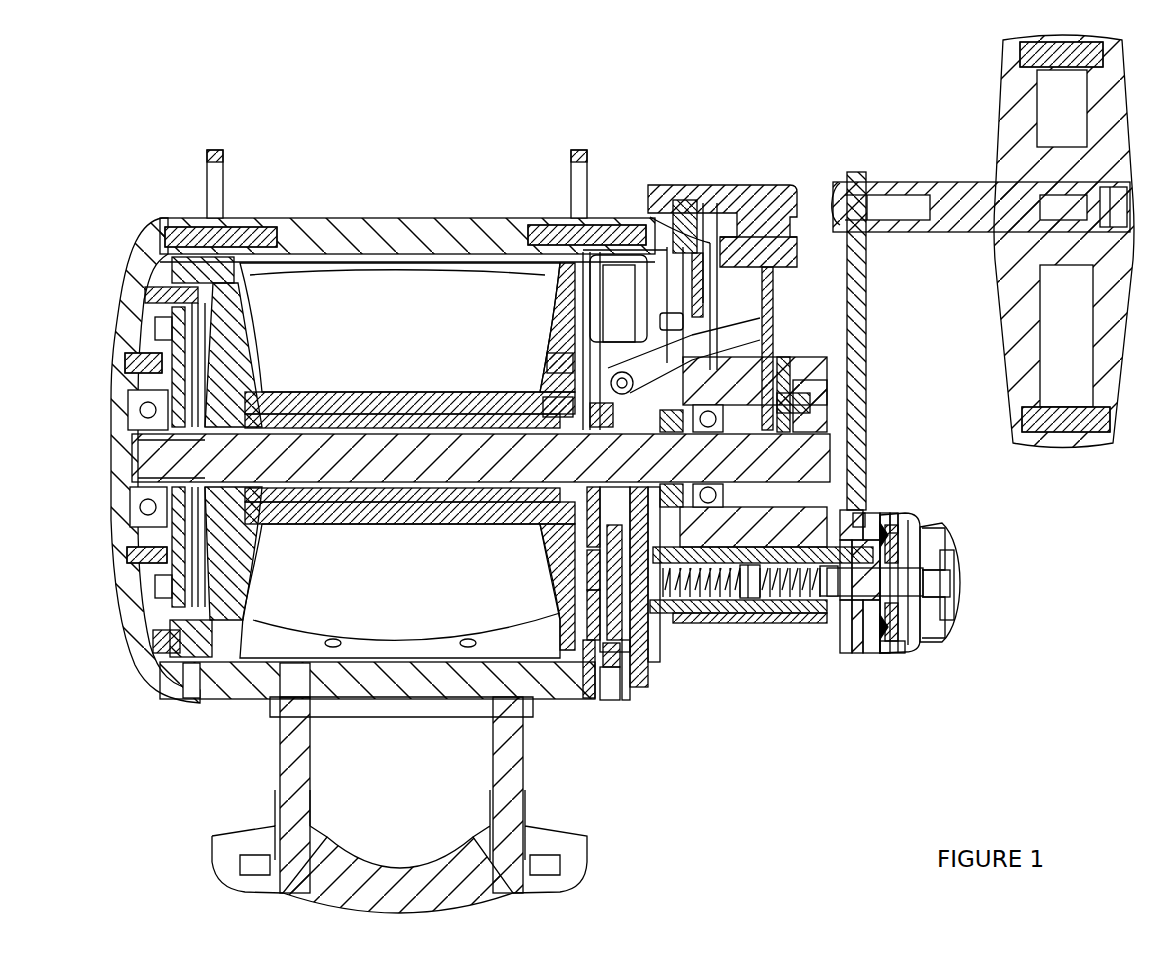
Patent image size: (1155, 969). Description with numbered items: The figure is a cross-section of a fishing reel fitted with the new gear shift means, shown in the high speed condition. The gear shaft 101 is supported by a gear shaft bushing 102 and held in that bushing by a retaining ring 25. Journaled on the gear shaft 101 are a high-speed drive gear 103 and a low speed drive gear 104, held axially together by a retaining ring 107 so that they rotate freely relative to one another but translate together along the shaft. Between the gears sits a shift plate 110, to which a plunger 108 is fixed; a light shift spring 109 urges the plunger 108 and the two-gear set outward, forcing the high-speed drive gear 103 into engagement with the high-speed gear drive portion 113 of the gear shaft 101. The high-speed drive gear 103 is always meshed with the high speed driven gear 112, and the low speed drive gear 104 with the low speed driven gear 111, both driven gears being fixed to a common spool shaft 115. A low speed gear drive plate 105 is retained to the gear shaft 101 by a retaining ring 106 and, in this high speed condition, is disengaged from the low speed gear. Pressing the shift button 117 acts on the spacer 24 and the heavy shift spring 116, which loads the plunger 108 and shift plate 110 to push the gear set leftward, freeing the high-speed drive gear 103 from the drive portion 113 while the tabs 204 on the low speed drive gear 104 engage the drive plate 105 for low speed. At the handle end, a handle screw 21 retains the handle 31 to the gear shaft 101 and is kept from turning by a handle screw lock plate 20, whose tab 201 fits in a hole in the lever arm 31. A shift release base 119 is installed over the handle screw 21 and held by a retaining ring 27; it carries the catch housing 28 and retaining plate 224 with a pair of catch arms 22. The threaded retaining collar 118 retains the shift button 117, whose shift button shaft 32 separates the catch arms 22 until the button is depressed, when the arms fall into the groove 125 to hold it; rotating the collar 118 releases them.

The handle screw lock plate 20 is at (878, 655).
The handle screw 21 is at (872, 530).
The catch arms 22 is at (905, 557).
The spacer 24 is at (848, 612).
The retaining ring 25 is at (858, 652).
The retaining ring 27 is at (895, 650).
The catch housing 28 is at (892, 531).
The handle 31 is at (868, 324).
The shift button shaft 32 is at (958, 585).
The gear shaft 101 is at (855, 540).
The gear shaft bushing 102 is at (866, 525).
The high-speed drive gear 103 is at (640, 702).
The low speed drive gear 104 is at (610, 702).
The low speed gear drive plate 105 is at (592, 620).
The retaining ring 106 is at (590, 578).
The retaining ring 107 is at (650, 645).
The plunger 108 is at (732, 612).
The light shift spring 109 is at (700, 608).
The shift plate 110 is at (605, 700).
The low speed driven gear 111 is at (655, 338).
The high speed driven gear 112 is at (652, 392).
The high-speed gear drive portion 113 is at (670, 615).
The spool shaft 115 is at (385, 434).
The heavy shift spring 116 is at (808, 622).
The shift button 117 is at (953, 586).
The threaded retaining collar 118 is at (884, 530).
The shift release base 119 is at (880, 655).
The groove 125 is at (955, 612).
The tab 201 is at (860, 525).
The tabs 204 is at (590, 553).
The retaining plate 224 is at (922, 526).